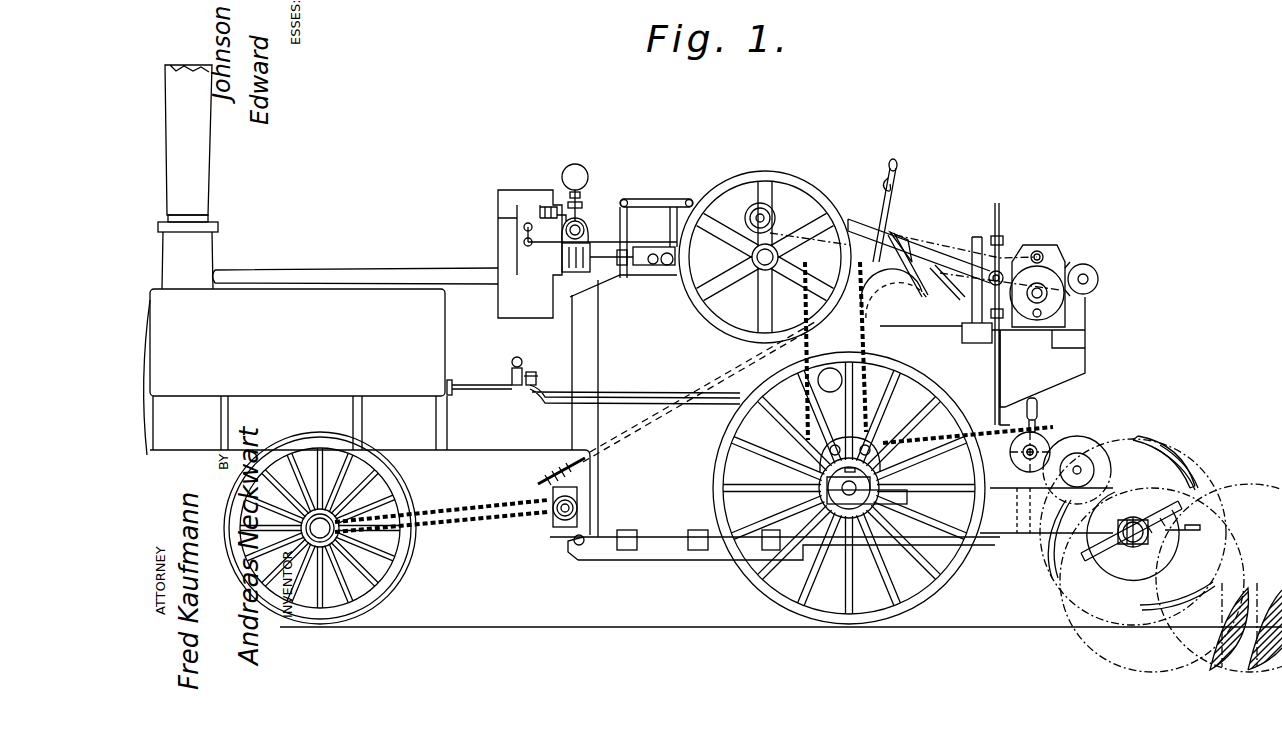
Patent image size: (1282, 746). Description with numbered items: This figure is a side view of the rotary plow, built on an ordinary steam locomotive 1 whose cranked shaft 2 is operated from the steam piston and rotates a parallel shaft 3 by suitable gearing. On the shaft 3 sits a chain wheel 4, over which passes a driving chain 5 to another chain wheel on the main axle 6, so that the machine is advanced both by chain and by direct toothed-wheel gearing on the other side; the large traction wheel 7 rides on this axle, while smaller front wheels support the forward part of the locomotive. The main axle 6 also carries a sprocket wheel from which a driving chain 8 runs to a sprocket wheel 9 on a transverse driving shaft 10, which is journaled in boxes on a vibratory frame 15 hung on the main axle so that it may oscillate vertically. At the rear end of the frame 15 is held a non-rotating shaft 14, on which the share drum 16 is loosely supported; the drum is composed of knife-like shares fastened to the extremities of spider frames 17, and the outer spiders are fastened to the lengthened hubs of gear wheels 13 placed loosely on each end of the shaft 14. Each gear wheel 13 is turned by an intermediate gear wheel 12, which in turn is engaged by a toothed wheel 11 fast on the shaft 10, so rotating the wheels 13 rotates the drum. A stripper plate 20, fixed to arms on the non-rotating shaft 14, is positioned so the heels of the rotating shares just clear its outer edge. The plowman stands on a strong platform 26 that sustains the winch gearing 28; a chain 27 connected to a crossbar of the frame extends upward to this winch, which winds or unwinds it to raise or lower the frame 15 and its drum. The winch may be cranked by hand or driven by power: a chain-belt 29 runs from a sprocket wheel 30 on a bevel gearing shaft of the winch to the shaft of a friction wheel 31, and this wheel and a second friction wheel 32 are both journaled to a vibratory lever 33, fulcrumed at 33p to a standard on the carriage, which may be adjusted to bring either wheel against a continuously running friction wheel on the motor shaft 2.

The steam locomotive 1 is at (367, 412).
The cranked shaft 2 is at (758, 270).
The parallel shaft 3 is at (828, 367).
The chain wheel 4 is at (880, 308).
The driving chain 5 is at (890, 338).
The main axle 6 is at (867, 488).
The traction wheel 7 is at (716, 468).
The driving chain 8 is at (992, 425).
The sprocket wheel 9 is at (980, 485).
The transverse driving shaft 10 is at (1012, 377).
The toothed wheel 11 is at (1040, 447).
The intermediate gear wheel 12 is at (1090, 452).
The gear wheel 13 is at (1118, 575).
The non-rotating shaft 14 is at (1142, 540).
The vibratory frame 15 is at (1161, 555).
The share drum 16 is at (1170, 452).
The spider frames 17 is at (1155, 460).
The stripper plate 20 is at (1200, 536).
The stand or platform 26 is at (1016, 338).
The chain 27 is at (1040, 405).
The winch gearing 28 is at (1047, 277).
The chain-belt 29 is at (970, 250).
The sprocket wheel 30 is at (1100, 278).
The friction wheel 31 is at (775, 212).
The friction wheel 32 is at (790, 225).
The vibratory frame or lever 33 is at (925, 250).
The fulcrum 33p is at (1000, 270).